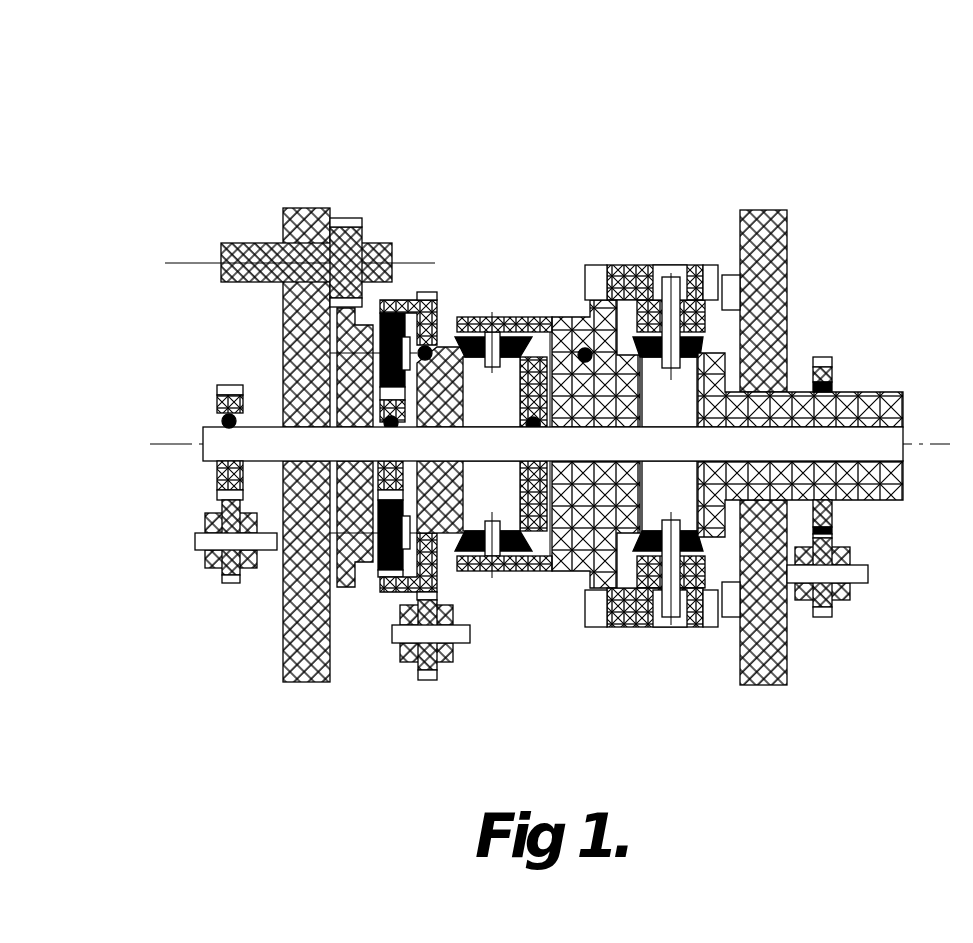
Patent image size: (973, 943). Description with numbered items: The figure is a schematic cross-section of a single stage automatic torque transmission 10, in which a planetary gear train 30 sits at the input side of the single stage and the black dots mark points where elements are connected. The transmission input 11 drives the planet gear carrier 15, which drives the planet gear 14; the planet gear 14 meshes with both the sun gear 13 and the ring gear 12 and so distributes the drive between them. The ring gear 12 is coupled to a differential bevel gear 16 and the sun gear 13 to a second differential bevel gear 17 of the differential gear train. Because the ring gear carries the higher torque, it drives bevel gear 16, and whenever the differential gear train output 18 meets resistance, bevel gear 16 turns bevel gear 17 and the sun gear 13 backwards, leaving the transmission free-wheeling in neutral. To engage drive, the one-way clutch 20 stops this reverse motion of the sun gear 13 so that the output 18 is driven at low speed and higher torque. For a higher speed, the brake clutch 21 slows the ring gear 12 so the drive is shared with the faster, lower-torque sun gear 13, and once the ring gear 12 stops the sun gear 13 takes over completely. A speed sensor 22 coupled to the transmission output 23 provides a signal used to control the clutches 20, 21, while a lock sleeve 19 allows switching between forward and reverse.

The single stage automatic torque transmission 10 is at (603, 70).
The transmission input 11 is at (238, 262).
The ring gear 12 is at (390, 590).
The sun gear 13 is at (283, 588).
The planet gear 14 is at (372, 560).
The planet gear carrier 15 is at (357, 405).
The differential bevel gear 16 is at (439, 378).
The differential bevel gear 17 is at (541, 353).
The differential gear train output 18 is at (535, 572).
The lock sleeve 19 is at (642, 268).
The one-way clutch 20 is at (208, 568).
The brake clutch 21 is at (448, 663).
The speed sensor 22 is at (833, 598).
The transmission output 23 is at (862, 393).
The planetary gear train 30 is at (352, 183).